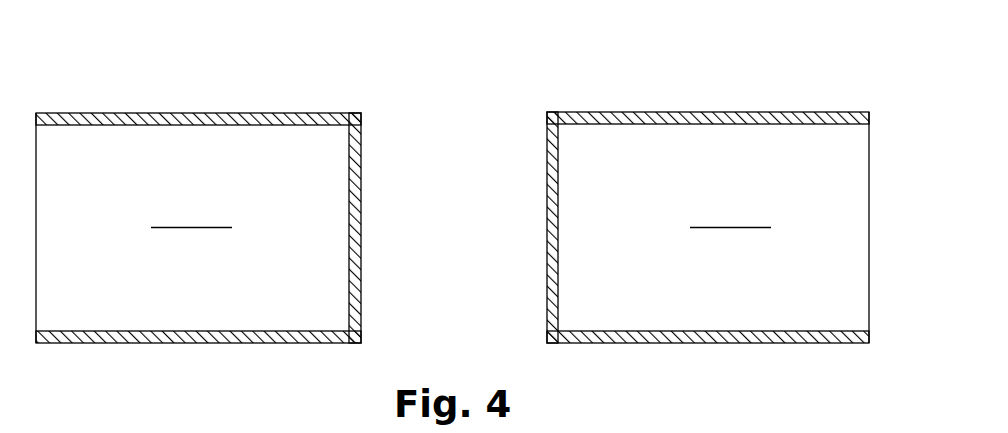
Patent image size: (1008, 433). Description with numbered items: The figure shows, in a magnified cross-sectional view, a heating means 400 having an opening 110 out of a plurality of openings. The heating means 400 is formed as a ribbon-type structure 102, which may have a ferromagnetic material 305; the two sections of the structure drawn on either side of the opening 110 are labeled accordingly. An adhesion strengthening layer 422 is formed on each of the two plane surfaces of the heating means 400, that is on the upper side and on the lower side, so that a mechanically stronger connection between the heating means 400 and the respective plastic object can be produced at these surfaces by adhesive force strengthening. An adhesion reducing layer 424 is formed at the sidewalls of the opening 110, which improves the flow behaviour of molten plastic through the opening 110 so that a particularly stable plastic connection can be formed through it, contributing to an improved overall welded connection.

The heating means 400 is at (849, 68).
The ribbon-type structure 102 is at (452, 227).
The ferromagnetic material 305 is at (452, 227).
The opening 110 is at (477, 230).
The adhesion strengthening layer 422 is at (268, 112).
The adhesion reducing layer 424 is at (361, 165).